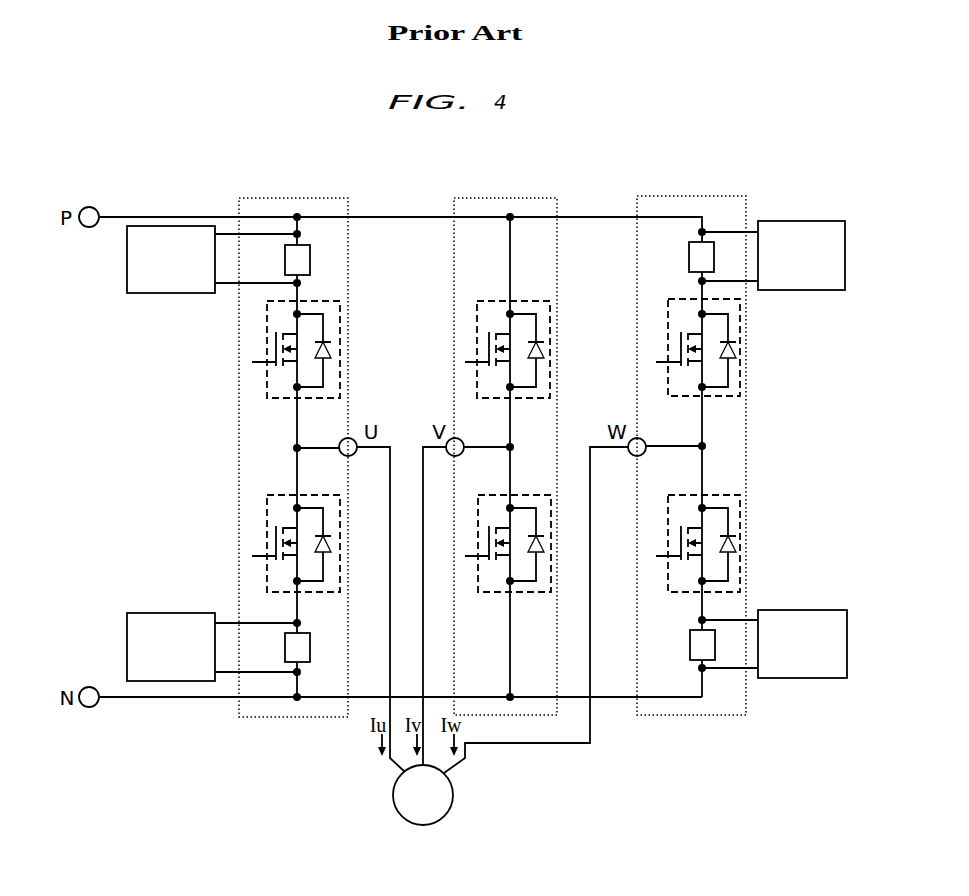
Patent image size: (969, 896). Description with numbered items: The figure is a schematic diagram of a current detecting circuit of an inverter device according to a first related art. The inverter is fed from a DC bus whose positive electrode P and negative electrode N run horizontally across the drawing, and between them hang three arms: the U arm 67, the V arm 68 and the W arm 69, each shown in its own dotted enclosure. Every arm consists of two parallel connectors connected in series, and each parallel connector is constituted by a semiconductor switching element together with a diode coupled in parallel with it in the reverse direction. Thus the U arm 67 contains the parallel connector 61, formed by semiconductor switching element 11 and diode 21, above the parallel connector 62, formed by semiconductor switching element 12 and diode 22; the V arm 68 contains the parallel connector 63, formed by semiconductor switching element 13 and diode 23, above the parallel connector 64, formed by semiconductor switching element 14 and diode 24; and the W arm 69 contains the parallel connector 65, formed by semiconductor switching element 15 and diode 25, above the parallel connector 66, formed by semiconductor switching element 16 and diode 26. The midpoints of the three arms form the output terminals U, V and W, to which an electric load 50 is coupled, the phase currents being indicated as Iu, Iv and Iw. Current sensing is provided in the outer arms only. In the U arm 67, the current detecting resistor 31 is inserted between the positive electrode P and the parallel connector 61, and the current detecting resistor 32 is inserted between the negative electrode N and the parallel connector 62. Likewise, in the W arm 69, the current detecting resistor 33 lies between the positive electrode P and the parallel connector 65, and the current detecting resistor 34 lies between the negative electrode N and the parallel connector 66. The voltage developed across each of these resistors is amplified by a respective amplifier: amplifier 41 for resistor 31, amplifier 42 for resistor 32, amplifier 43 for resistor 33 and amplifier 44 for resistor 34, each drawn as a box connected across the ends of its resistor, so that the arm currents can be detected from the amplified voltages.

The semiconductor switching element 11 is at (267, 350).
The semiconductor switching element 12 is at (267, 543).
The semiconductor switching element 13 is at (477, 350).
The semiconductor switching element 14 is at (478, 540).
The semiconductor switching element 15 is at (668, 349).
The semiconductor switching element 16 is at (668, 540).
The diode 21 is at (330, 348).
The diode 22 is at (330, 543).
The diode 23 is at (543, 348).
The diode 24 is at (542, 541).
The diode 25 is at (736, 344).
The diode 26 is at (736, 539).
The current detecting resistor 31 is at (310, 258).
The current detecting resistor 32 is at (310, 648).
The current detecting resistor 33 is at (689, 255).
The current detecting resistor 34 is at (690, 642).
The amplifier 41 is at (127, 267).
The amplifier 42 is at (127, 637).
The amplifier 43 is at (795, 221).
The amplifier 44 is at (792, 610).
The electric load 50 is at (452, 790).
The parallel connector 61 is at (284, 349).
The parallel connector 62 is at (280, 542).
The parallel connector 63 is at (496, 348).
The parallel connector 64 is at (507, 534).
The parallel connector 65 is at (682, 347).
The parallel connector 66 is at (686, 543).
The U arm 67 is at (269, 198).
The V arm 68 is at (473, 198).
The W arm 69 is at (656, 196).